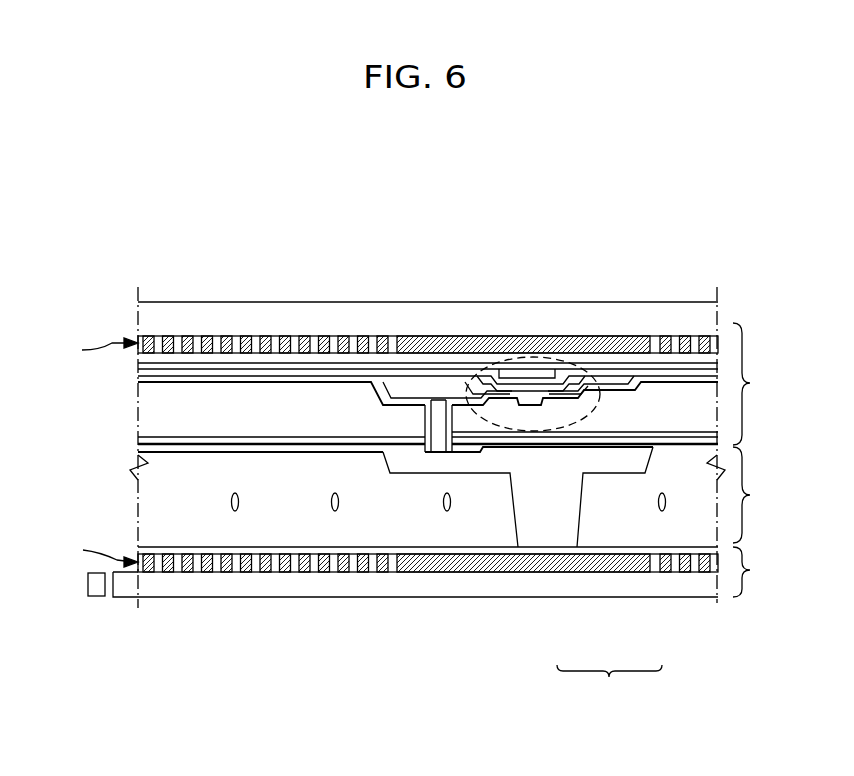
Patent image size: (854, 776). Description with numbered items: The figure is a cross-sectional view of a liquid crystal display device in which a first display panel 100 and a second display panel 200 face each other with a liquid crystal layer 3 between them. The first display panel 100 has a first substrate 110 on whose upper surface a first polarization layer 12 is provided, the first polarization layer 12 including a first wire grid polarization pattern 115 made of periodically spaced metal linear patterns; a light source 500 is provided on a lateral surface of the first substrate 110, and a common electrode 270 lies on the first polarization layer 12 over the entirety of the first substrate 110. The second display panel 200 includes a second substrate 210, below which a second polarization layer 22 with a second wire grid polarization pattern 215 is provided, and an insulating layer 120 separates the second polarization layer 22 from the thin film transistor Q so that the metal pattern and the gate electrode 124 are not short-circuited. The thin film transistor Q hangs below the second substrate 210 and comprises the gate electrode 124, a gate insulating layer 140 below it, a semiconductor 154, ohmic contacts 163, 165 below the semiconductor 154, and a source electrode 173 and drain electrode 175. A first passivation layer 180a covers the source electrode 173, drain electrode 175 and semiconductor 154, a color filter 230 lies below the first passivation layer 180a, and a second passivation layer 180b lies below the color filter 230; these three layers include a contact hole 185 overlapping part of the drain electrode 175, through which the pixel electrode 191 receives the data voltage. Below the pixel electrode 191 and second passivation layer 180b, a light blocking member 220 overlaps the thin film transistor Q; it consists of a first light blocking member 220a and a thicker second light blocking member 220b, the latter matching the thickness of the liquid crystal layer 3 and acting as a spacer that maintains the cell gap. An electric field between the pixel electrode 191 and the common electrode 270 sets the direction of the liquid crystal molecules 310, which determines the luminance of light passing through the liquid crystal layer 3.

The liquid crystal layer 3 is at (448, 497).
The first polarization layer 12 is at (101, 552).
The second polarization layer 22 is at (99, 348).
The first display panel 100 is at (459, 572).
The first substrate 110 is at (228, 585).
The first wire grid polarization pattern 115 is at (323, 572).
The insulating layer 120 is at (676, 362).
The gate electrode 124 is at (527, 370).
The gate insulating layer 140 is at (458, 372).
The semiconductor 154 is at (579, 379).
The ohmic contact 163 is at (618, 388).
The ohmic contact 165 is at (438, 398).
The source electrode 173 is at (605, 392).
The drain electrode 175 is at (413, 392).
The first passivation layer 180a is at (278, 377).
The second passivation layer 180b is at (315, 442).
The contact hole 185 is at (432, 432).
The pixel electrode 191 is at (193, 443).
The second display panel 200 is at (756, 384).
The second substrate 210 is at (236, 320).
The second wire grid polarization pattern 215 is at (360, 347).
The light blocking member 220 is at (609, 684).
The first light blocking member 220a is at (633, 462).
The second light blocking member 220b is at (562, 518).
The color filter 230 is at (163, 400).
The common electrode 270 is at (490, 550).
The liquid crystal molecules 310 is at (242, 502).
The light source 500 is at (96, 597).
The thin film transistor Q is at (486, 357).